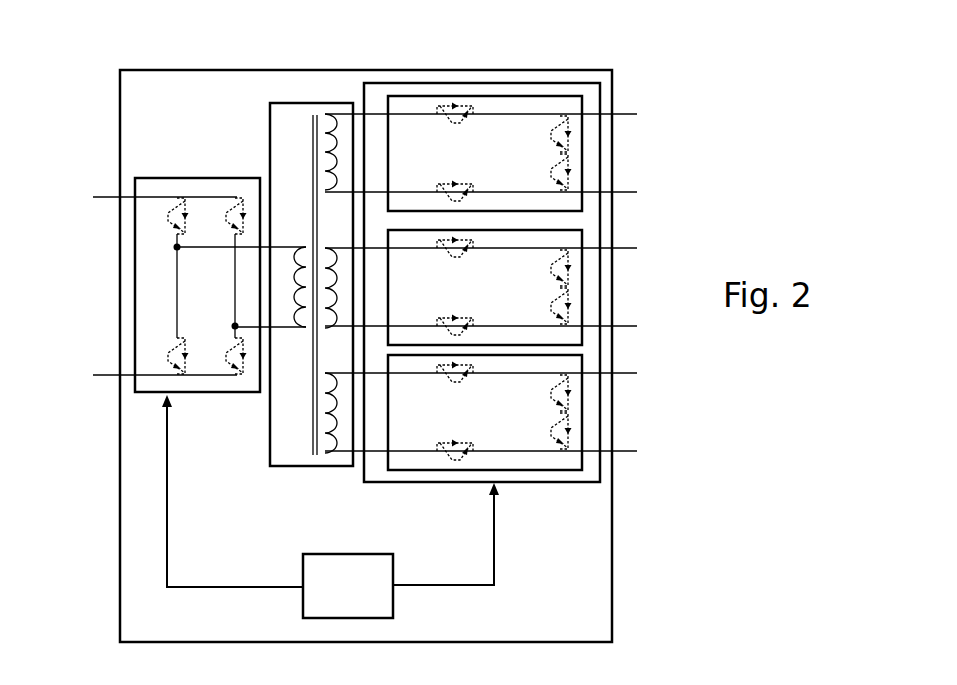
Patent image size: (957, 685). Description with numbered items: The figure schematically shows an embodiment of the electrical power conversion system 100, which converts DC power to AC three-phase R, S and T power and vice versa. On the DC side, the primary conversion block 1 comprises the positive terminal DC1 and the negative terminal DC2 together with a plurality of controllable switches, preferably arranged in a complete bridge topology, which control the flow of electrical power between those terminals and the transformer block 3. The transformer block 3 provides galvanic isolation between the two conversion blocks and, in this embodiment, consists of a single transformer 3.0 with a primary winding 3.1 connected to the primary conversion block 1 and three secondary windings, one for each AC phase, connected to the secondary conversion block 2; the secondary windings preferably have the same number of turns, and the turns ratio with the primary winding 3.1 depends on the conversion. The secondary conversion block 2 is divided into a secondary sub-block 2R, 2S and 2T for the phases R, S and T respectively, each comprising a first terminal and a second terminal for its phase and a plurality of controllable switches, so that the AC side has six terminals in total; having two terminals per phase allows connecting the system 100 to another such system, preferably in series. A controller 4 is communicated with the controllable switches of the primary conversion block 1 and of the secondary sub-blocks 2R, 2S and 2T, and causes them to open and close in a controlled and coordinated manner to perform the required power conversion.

The electrical power conversion system 100 is at (114, 93).
The primary conversion block 1 is at (203, 178).
The positive terminal DC1 is at (147, 183).
The negative terminal DC2 is at (145, 391).
The transformer block 3 is at (285, 252).
The transformer 3.0 is at (348, 246).
The primary winding 3.1 is at (302, 338).
The secondary conversion block 2 is at (499, 262).
The secondary sub-block 2R is at (572, 96).
The secondary sub-block 2S is at (572, 230).
The secondary sub-block 2T is at (565, 472).
The controller 4 is at (360, 596).